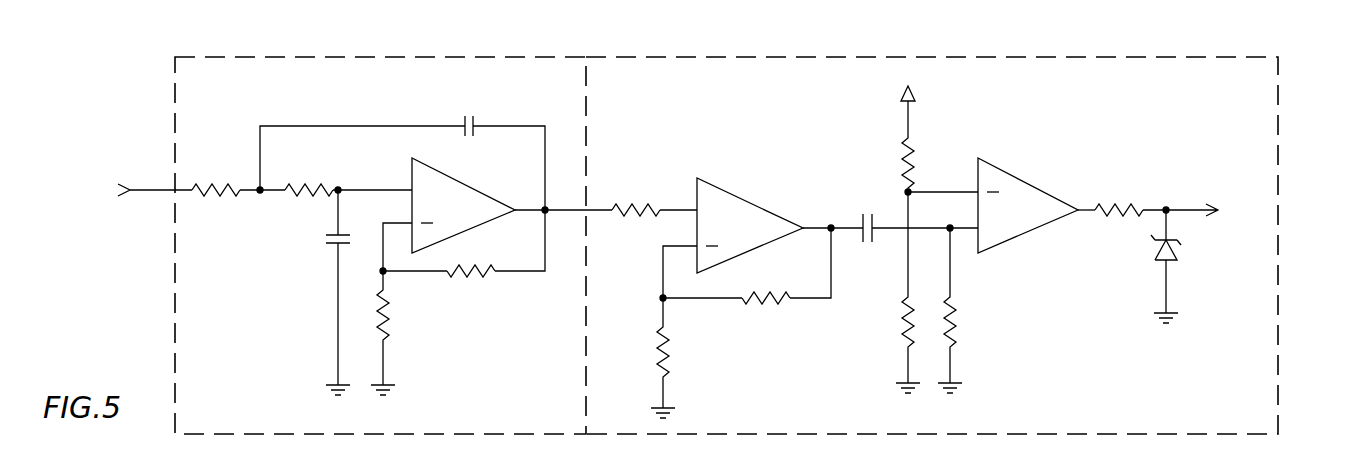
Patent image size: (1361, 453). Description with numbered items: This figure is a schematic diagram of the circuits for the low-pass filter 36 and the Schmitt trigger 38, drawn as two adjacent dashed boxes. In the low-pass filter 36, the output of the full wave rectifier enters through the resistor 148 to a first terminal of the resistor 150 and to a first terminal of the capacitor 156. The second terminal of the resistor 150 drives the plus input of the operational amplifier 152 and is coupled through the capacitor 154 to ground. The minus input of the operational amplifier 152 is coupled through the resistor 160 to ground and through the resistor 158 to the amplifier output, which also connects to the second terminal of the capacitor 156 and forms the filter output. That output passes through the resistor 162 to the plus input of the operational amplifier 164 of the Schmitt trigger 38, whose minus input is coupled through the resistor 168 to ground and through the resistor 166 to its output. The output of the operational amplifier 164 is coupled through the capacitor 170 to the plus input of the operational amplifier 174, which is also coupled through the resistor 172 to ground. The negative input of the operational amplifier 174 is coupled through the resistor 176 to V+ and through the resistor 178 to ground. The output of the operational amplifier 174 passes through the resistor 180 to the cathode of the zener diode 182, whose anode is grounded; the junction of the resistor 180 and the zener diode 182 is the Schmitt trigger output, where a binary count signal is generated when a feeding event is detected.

The low-pass filter 36 is at (172, 88).
The Schmitt trigger 38 is at (1283, 106).
The resistor 148 is at (236, 163).
The resistor 150 is at (312, 185).
The operational amplifier 152 is at (478, 196).
The capacitor 154 is at (322, 246).
The capacitor 156 is at (476, 120).
The resistor 158 is at (458, 278).
The resistor 160 is at (387, 322).
The resistor 162 is at (632, 216).
The operational amplifier 164 is at (744, 202).
The resistor 166 is at (762, 304).
The resistor 168 is at (670, 348).
The capacitor 170 is at (878, 246).
The resistor 172 is at (960, 313).
The operational amplifier 174 is at (1048, 198).
The resistor 176 is at (904, 158).
The resistor 178 is at (904, 328).
The resistor 180 is at (1118, 206).
The zener diode 182 is at (1180, 252).